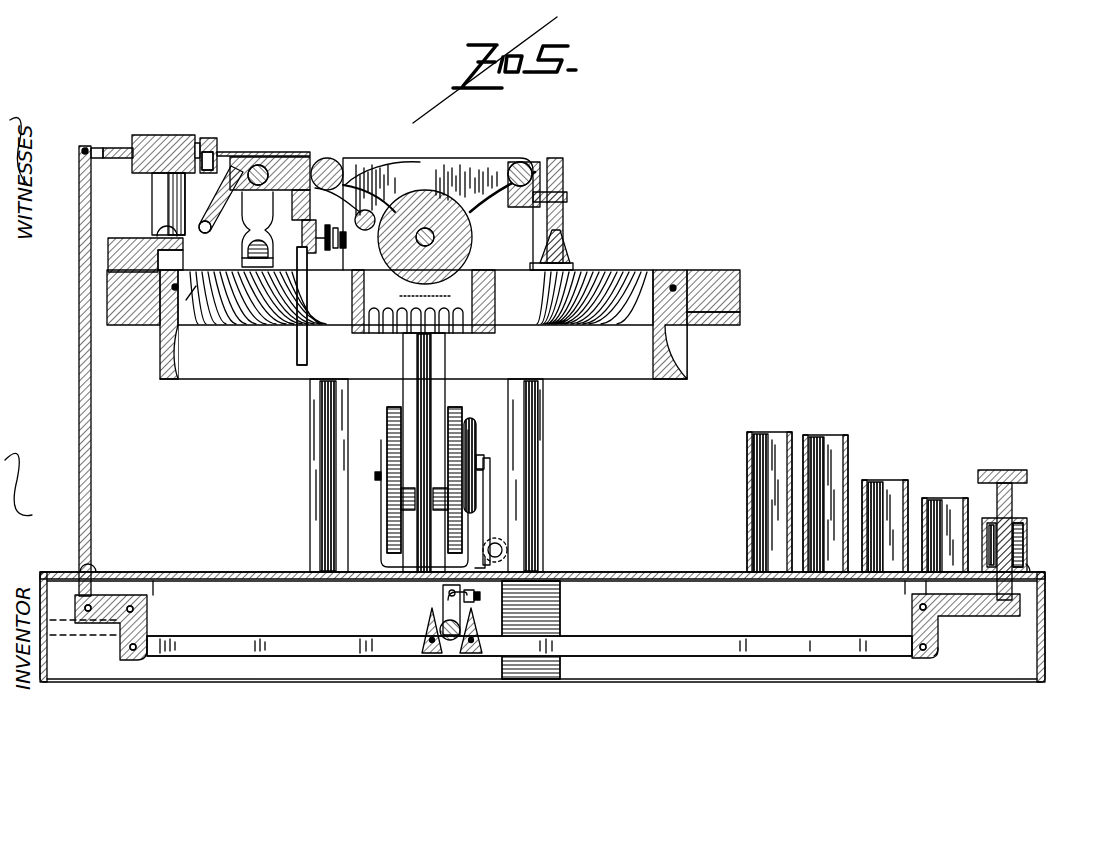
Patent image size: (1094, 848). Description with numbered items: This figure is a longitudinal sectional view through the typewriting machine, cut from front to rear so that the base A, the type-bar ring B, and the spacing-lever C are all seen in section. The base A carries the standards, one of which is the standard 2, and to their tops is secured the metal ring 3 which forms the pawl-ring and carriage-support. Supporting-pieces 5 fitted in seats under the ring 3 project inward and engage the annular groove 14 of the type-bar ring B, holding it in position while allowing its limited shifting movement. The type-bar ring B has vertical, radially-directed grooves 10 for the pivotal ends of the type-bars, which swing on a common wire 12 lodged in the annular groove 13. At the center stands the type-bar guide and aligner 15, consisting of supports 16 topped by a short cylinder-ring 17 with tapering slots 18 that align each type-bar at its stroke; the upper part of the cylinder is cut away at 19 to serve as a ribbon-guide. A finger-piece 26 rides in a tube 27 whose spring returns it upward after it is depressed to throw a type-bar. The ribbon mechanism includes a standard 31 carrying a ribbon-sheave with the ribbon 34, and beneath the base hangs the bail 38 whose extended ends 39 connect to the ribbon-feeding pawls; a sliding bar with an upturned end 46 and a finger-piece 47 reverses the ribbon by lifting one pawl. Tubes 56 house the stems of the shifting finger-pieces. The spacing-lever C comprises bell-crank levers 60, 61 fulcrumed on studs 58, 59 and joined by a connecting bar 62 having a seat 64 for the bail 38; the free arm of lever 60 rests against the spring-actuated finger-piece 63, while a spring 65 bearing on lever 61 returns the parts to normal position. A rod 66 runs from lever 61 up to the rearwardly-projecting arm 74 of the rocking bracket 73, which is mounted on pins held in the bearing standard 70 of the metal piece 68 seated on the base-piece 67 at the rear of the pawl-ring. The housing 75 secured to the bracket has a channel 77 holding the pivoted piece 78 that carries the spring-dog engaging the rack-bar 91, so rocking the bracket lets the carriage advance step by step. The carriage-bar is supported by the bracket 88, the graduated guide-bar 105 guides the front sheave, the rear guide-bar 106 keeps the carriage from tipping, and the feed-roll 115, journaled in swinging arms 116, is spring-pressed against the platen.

The standard 2 is at (426, 475).
The ring 3 is at (726, 291).
The supporting-pieces 5 is at (742, 318).
The grooves 10 is at (258, 328).
The wire 12 is at (196, 282).
The annular groove 13 is at (676, 290).
The annular groove 14 is at (160, 330).
The type-bar guide and aligner 15 is at (500, 301).
The supports 16 is at (445, 353).
The cylinder-ring 17 is at (462, 290).
The tapering slots 18 is at (352, 317).
The ribbon-guide 19 is at (439, 228).
The finger-piece 26 is at (485, 463).
The tube 27 is at (945, 521).
The standard 31 is at (387, 518).
The ribbon 34 is at (336, 277).
The bail 38 is at (445, 600).
The extended ends of bail 39 is at (484, 604).
The vertical end of sliding bar 46 is at (492, 522).
The finger-piece 47 is at (508, 552).
The tubes 56 is at (858, 458).
The bearing stud 58 is at (905, 590).
The bearing stud 59 is at (160, 594).
The bell-crank lever 60 is at (944, 625).
The bell-crank lever 61 is at (112, 600).
The connecting rod or bar 62 is at (529, 630).
The finger-piece 63 is at (1016, 519).
The seat 64 is at (420, 628).
The spring 65 is at (98, 612).
The rod 66 is at (80, 445).
The base-piece 67 is at (124, 240).
The piece of metal 68 is at (158, 236).
The bearing arm or standard 70 is at (168, 204).
The rocking bracket 73 is at (152, 130).
The rearwardly-projecting arm 74 is at (112, 148).
The housing 75 is at (206, 138).
The channel 77 is at (222, 152).
The piece 78 is at (214, 199).
The bracket 88 is at (262, 232).
The rack-bar 91 is at (245, 157).
The guide-bar 105 is at (562, 248).
The guide-bar 106 is at (349, 218).
The feed-roll 115 is at (438, 214).
The swinging arms 116 is at (350, 185).
The base A is at (553, 627).
The type-bar ring B is at (620, 250).